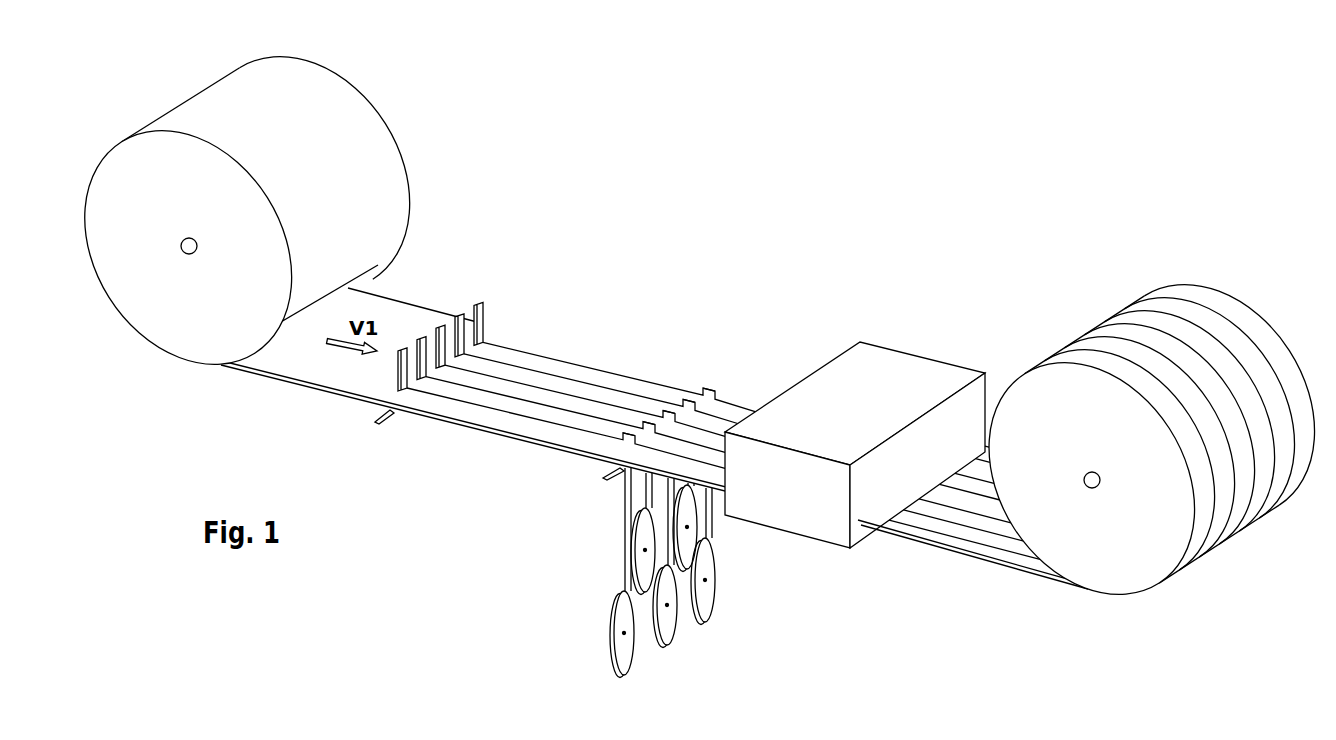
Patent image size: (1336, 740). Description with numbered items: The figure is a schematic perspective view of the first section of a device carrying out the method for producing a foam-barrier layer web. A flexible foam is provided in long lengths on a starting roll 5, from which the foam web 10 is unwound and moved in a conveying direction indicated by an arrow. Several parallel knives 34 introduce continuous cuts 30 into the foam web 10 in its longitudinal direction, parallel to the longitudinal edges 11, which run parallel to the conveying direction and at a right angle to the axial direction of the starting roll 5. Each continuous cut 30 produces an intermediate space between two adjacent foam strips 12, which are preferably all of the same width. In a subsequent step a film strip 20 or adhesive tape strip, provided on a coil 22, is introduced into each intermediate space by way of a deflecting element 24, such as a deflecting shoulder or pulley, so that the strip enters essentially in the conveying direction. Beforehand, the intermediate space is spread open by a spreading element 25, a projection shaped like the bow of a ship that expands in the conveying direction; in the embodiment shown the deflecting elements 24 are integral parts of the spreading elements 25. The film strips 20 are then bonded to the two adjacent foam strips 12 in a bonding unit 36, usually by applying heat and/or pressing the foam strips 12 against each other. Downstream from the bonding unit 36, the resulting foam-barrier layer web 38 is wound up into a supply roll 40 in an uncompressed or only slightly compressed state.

The starting roll 5 is at (340, 113).
The foam web 10 is at (302, 363).
The longitudinal edges 11 is at (403, 302).
The foam strips 12 is at (645, 368).
The film strip 20 is at (708, 500).
The coil 22 is at (620, 653).
The deflecting element 24 is at (620, 474).
The spreading element 25 is at (709, 388).
The continuous cut 30 is at (554, 360).
The knife 34 is at (479, 303).
The bonding unit 36 is at (845, 390).
The foam-barrier layer web 38 is at (960, 508).
The supply roll 40 is at (1092, 418).